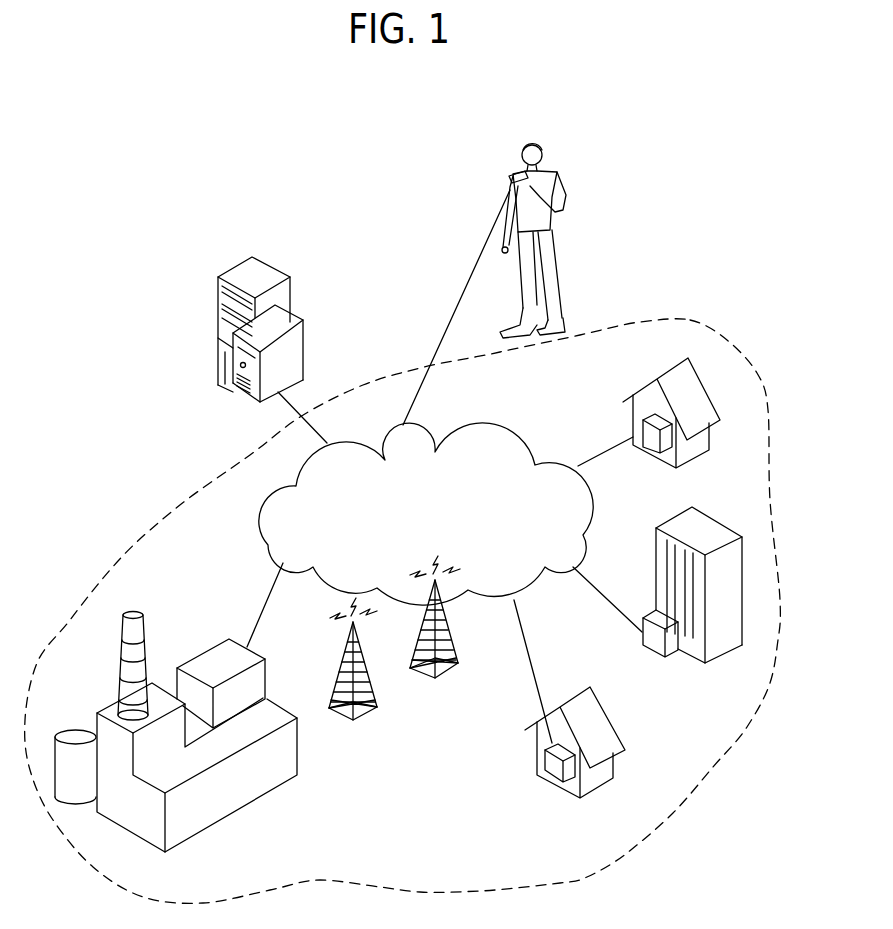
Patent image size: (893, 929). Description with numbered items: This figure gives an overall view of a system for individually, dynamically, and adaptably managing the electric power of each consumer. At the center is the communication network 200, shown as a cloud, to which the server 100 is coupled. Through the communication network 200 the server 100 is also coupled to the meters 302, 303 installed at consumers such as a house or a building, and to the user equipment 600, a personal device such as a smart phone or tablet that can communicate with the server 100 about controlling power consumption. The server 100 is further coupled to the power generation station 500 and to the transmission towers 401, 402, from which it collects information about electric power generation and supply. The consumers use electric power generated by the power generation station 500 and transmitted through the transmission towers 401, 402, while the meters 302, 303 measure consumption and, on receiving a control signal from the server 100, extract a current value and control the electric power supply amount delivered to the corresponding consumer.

The server 100 is at (288, 302).
The communication network 200 is at (513, 438).
The meter 302 is at (668, 658).
The meter 303 is at (548, 773).
The transmission tower 401 is at (358, 722).
The transmission tower 402 is at (440, 680).
The power generation station 500 is at (227, 818).
The user equipment 600 is at (507, 176).